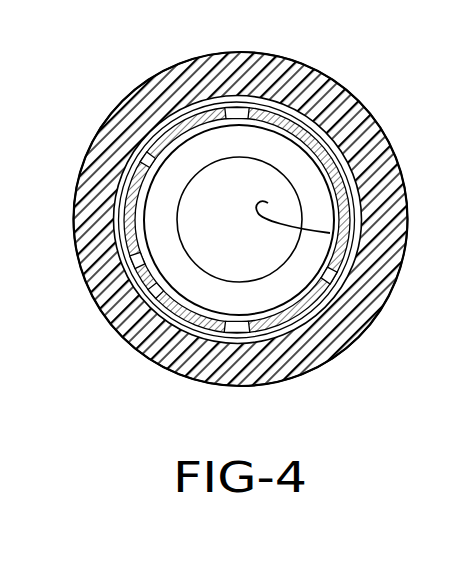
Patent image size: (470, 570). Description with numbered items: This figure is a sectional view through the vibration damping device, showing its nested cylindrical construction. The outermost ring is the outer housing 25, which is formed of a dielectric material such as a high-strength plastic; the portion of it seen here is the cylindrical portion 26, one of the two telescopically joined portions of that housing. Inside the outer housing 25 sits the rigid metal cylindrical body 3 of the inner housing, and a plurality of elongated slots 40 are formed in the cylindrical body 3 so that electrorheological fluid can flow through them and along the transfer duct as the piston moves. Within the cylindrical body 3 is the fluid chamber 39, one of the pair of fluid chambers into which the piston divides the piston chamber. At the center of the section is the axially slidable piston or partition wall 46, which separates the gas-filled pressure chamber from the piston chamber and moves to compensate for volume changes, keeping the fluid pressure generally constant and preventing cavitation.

The cylindrical body 3 is at (190, 97).
The outer housing 25 is at (342, 70).
The cylindrical portion 26 is at (204, 118).
The fluid chamber 39 is at (330, 233).
The elongated slots 40 is at (341, 276).
The partition wall 46 is at (278, 290).